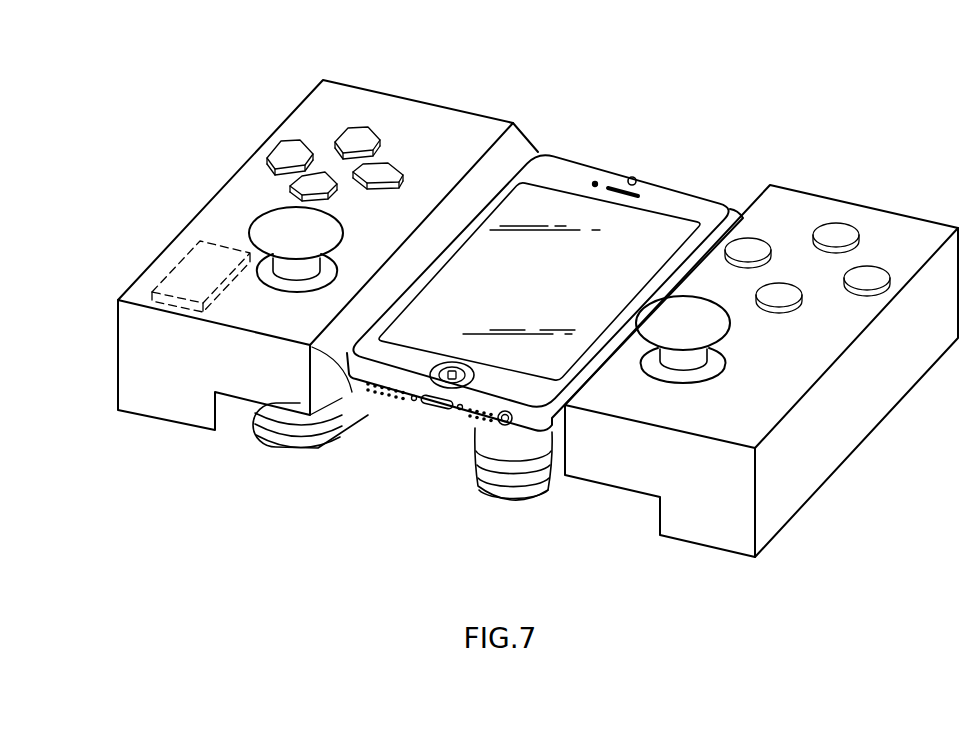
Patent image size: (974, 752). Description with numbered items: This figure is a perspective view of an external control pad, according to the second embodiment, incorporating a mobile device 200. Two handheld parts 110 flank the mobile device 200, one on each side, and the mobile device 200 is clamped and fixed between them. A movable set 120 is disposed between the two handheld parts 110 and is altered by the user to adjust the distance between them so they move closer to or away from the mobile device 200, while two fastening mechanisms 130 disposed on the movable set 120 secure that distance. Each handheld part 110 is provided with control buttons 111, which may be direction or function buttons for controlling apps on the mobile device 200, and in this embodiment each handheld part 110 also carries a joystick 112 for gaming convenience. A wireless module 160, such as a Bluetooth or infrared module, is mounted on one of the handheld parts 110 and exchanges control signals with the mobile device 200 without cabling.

The handheld part 110 is at (405, 112).
The control button 111 is at (289, 150).
The joystick 112 is at (282, 228).
The movable set 120 is at (257, 414).
The fastening mechanism 130 is at (288, 425).
The wireless module 160 is at (188, 273).
The mobile device 200 is at (652, 193).